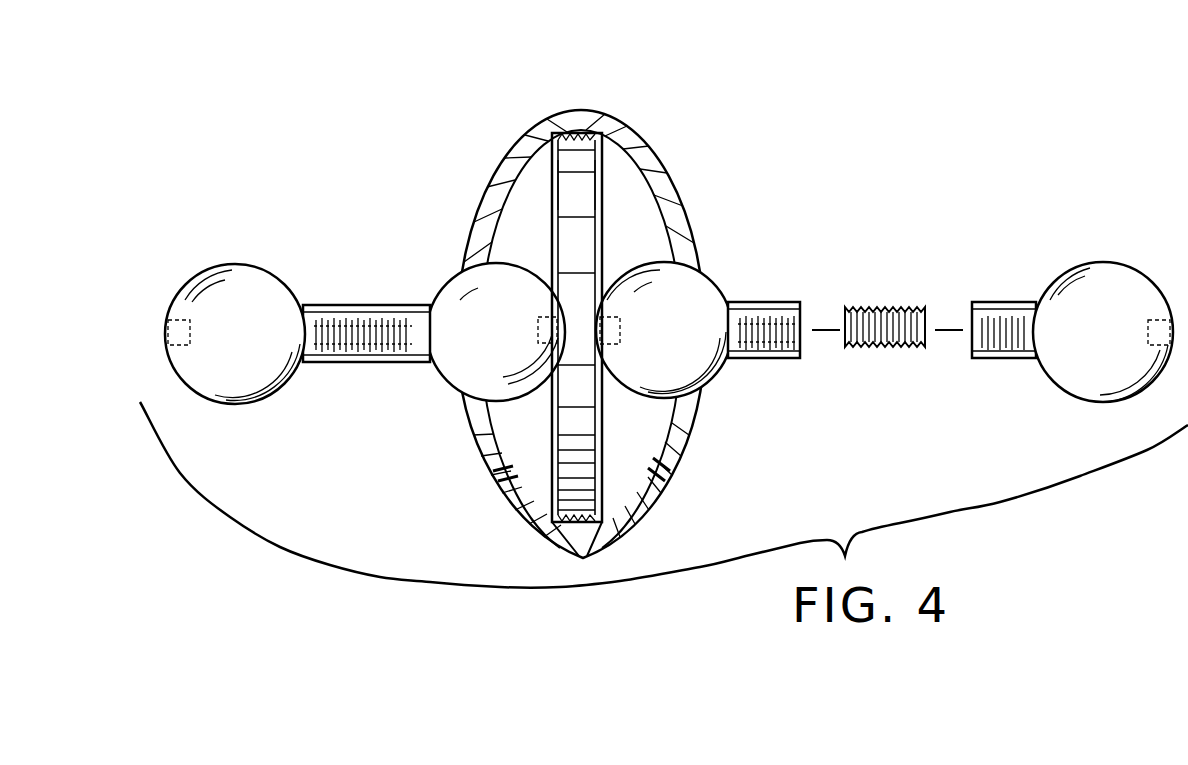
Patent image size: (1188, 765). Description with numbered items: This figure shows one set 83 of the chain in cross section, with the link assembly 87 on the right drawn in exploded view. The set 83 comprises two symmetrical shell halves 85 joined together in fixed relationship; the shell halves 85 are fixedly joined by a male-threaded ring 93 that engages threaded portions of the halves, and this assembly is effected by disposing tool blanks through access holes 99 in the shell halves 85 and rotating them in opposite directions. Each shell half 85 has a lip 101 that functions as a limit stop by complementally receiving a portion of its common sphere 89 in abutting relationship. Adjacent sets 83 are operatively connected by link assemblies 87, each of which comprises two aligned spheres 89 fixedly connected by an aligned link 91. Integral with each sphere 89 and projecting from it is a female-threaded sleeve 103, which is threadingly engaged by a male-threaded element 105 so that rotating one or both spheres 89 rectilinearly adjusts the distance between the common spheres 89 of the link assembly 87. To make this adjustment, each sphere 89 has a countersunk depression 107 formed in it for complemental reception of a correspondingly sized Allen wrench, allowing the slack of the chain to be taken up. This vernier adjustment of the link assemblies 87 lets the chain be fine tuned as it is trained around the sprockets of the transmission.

The set 83 is at (577, 132).
The shell half 85 is at (632, 145).
The link assembly 87 is at (950, 291).
The sphere 89 is at (260, 340).
The link 91 is at (365, 318).
The male-threaded ring 93 is at (605, 218).
The access hole 99 is at (497, 165).
The lip 101 is at (697, 248).
The female-threaded sleeve 103 is at (800, 340).
The male-threaded element 105 is at (900, 347).
The depression 107 is at (617, 332).